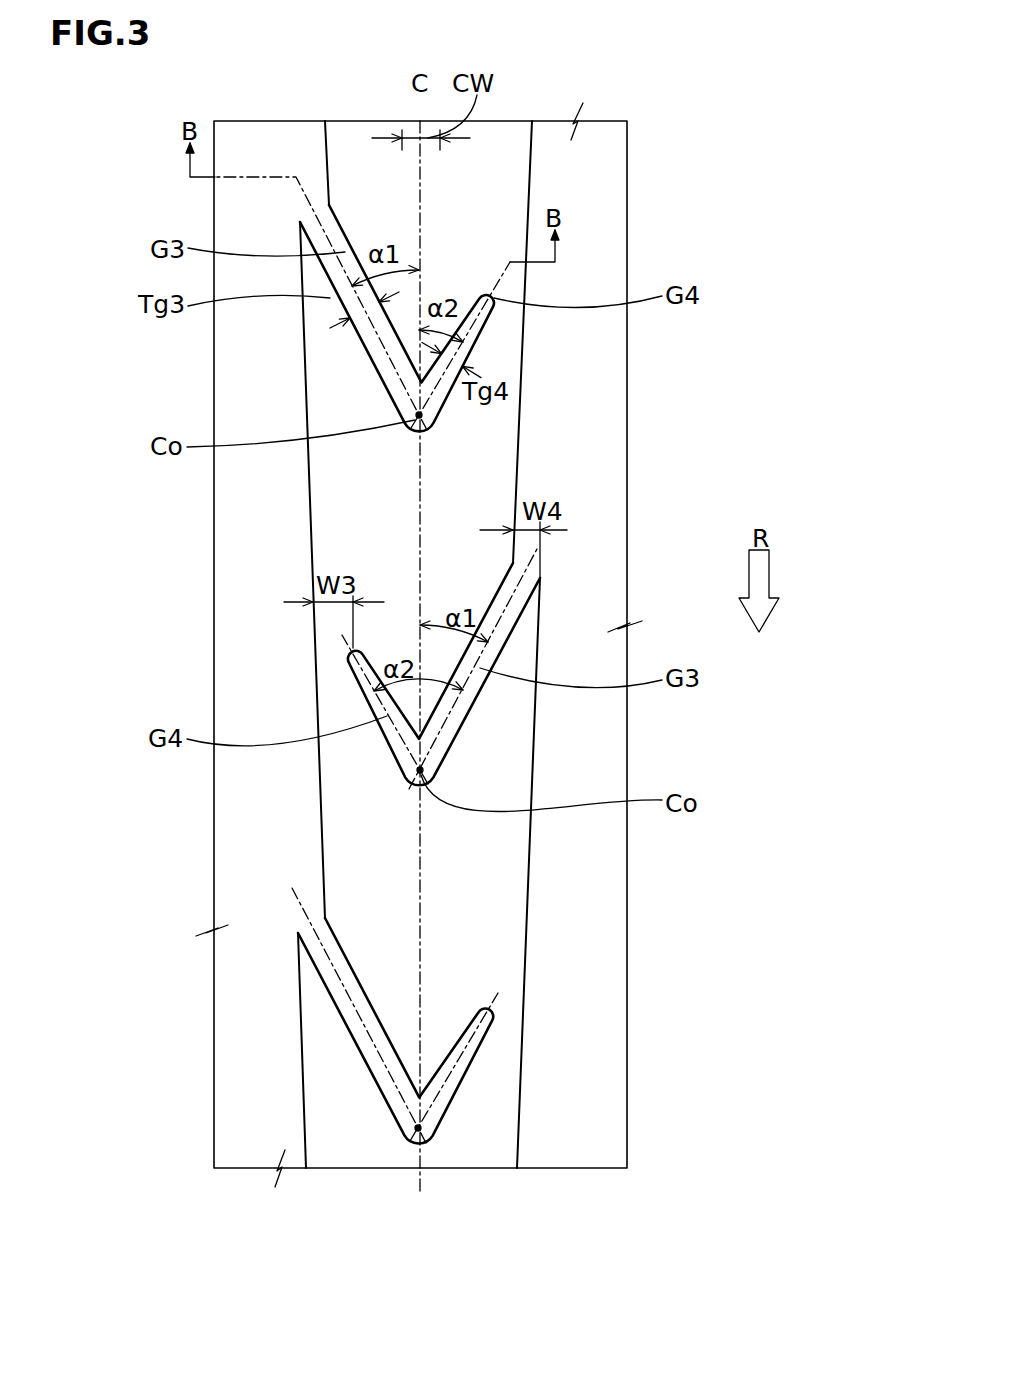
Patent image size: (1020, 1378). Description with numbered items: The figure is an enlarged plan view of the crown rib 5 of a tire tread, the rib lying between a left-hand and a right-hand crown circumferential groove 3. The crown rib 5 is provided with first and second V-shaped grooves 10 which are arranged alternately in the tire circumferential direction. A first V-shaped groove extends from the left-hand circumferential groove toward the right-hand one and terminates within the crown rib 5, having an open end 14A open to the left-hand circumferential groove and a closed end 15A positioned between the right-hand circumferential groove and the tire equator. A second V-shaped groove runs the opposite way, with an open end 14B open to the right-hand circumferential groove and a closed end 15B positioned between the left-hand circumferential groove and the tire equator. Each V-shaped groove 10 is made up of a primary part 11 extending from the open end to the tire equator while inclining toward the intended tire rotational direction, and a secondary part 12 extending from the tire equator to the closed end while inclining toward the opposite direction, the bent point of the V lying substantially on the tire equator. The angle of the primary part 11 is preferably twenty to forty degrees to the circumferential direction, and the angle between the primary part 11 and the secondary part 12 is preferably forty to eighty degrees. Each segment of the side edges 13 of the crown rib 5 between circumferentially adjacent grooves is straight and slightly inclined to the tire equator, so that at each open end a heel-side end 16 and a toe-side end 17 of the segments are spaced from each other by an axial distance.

The crown circumferential groove 3 is at (247, 1145).
The crown rib 5 is at (358, 1145).
The V-shaped groove 10 is at (730, 713).
The primary part 11 is at (460, 717).
The secondary part 12 is at (392, 742).
The side edge 13 is at (304, 365).
The open end 14A is at (533, 563).
The open end 14B is at (317, 205).
The closed end 15A is at (353, 677).
The closed end 15B is at (492, 322).
The heel-side end 16 is at (299, 220).
The toe-side end 17 is at (329, 205).